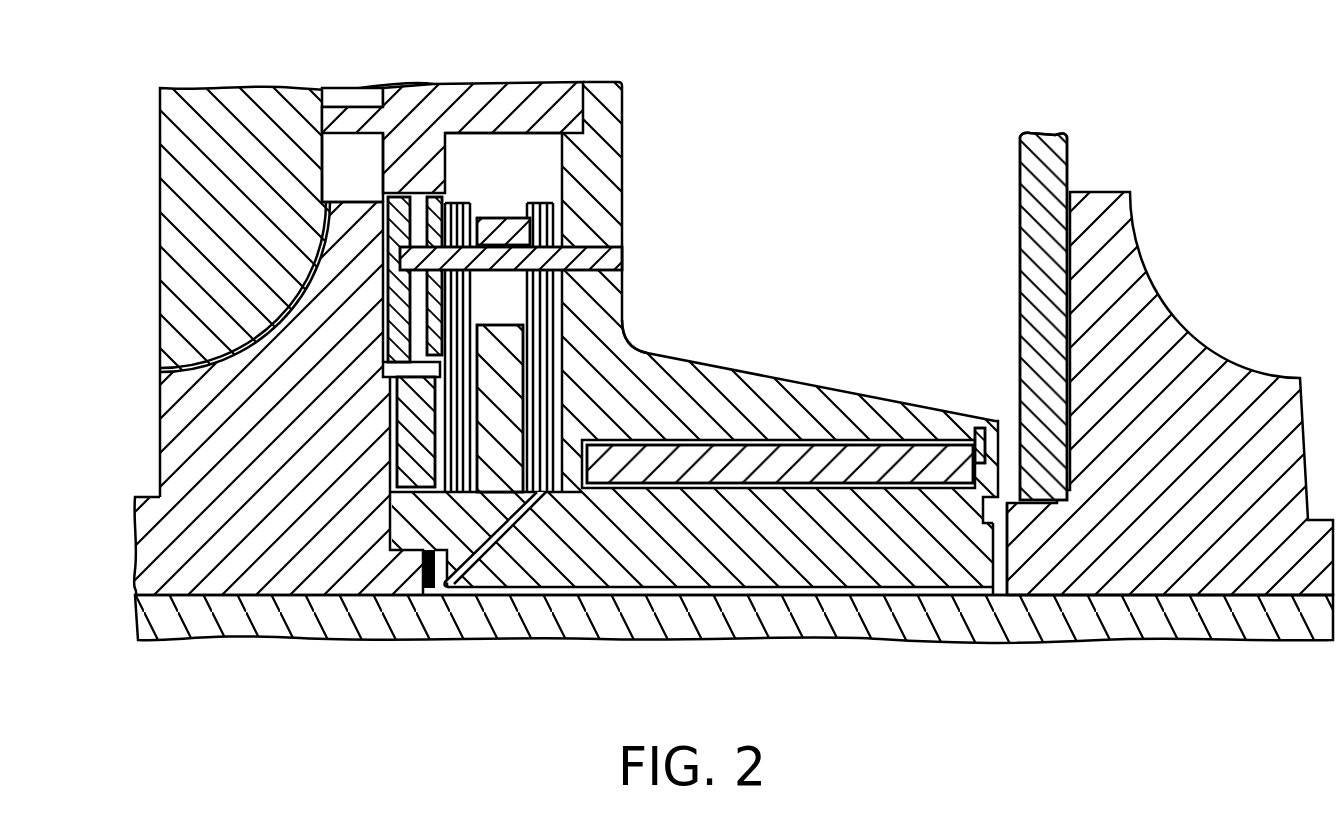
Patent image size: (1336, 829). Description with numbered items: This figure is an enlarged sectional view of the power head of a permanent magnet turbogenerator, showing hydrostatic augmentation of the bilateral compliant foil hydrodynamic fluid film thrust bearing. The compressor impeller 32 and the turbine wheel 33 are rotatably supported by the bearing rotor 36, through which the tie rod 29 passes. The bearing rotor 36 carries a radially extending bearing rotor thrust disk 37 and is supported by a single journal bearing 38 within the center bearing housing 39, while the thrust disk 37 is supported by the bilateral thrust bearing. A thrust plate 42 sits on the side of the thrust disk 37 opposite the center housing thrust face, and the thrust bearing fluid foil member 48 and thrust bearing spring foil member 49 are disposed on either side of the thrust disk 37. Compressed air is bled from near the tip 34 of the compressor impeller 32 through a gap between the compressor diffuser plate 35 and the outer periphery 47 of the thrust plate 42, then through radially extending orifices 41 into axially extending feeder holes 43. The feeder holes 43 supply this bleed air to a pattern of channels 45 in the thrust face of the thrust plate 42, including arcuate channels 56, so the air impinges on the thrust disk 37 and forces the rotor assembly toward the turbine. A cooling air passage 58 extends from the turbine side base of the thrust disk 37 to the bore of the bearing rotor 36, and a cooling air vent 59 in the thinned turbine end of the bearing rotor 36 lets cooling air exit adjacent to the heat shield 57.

The tie rod 29 is at (918, 646).
The compressor impeller 32 is at (158, 380).
The turbine wheel 33 is at (1165, 285).
The tip of compressor impeller 34 is at (350, 203).
The compressor diffuser plate 35 is at (530, 82).
The bearing rotor 36 is at (885, 428).
The bearing rotor thrust disk 37 is at (511, 419).
The journal bearing 38 is at (768, 446).
The center bearing housing 39 is at (745, 366).
The radially extending orifices 41 is at (432, 198).
The thrust plate 42 is at (449, 200).
The feeder holes 43 is at (397, 408).
The channels 45 is at (385, 372).
The outer periphery of thrust plate 47 is at (407, 198).
The thrust bearing fluid foil member 48 is at (470, 213).
The thrust bearing spring foil member 49 is at (543, 198).
The arcuate channels 56 is at (625, 262).
The heat shield 57 is at (1020, 183).
The cooling air passage 58 is at (477, 574).
The cooling air vent 59 is at (998, 516).